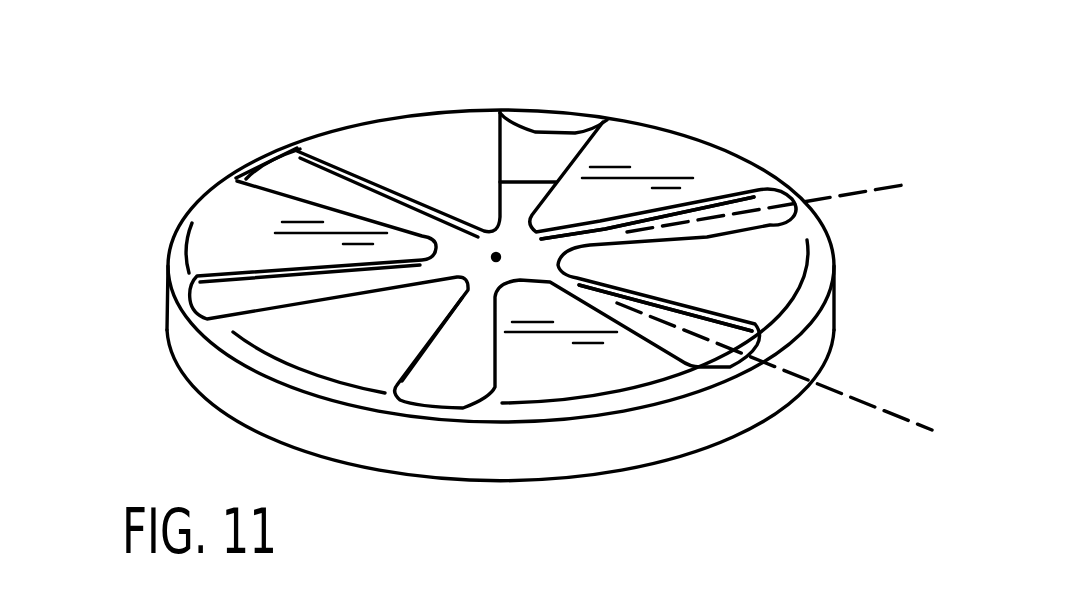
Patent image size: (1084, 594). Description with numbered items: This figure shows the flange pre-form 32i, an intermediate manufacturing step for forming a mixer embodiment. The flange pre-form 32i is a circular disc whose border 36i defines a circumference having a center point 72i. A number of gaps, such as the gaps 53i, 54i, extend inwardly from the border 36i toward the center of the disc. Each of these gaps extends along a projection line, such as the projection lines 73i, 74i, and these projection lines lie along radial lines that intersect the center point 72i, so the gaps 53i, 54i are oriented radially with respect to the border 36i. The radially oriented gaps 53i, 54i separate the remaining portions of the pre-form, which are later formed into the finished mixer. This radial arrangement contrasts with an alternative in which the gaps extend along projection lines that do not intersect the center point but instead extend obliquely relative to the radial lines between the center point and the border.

The flange pre-form 32i is at (164, 299).
The border 36i is at (190, 357).
The gap 53i is at (720, 237).
The gap 54i is at (742, 340).
The center point 72i is at (496, 256).
The projection line 73i is at (858, 192).
The projection line 74i is at (880, 412).